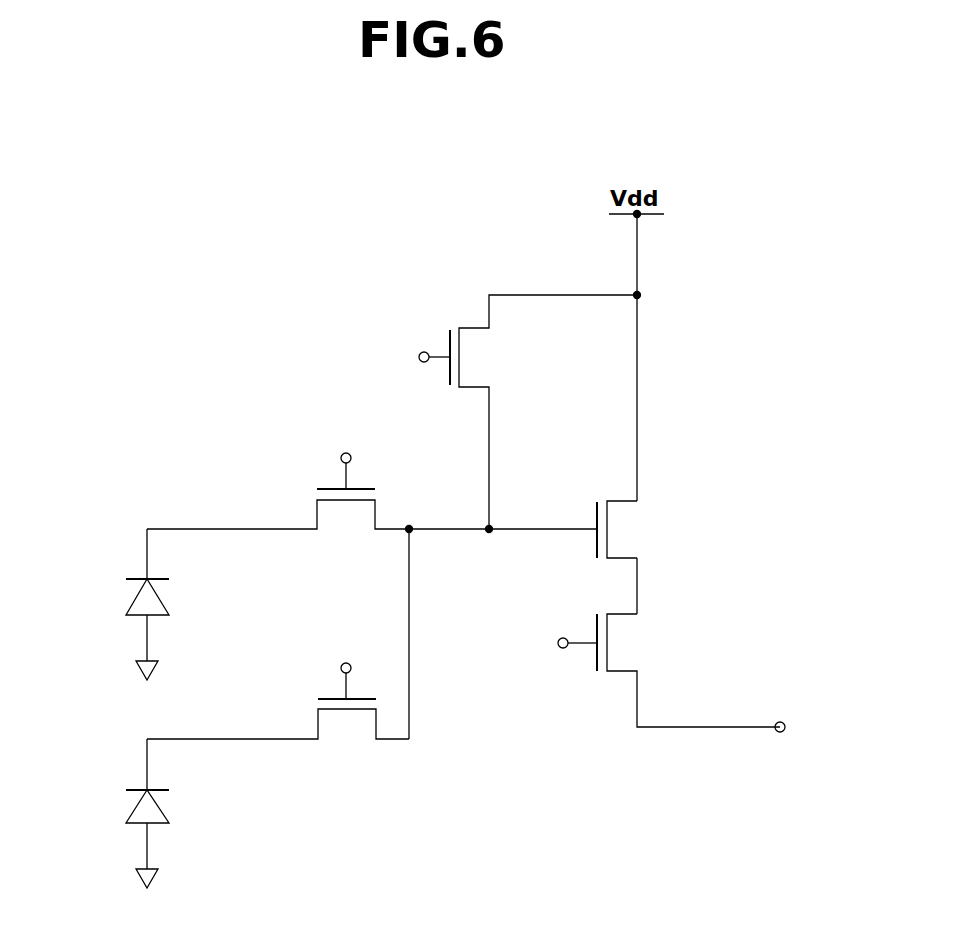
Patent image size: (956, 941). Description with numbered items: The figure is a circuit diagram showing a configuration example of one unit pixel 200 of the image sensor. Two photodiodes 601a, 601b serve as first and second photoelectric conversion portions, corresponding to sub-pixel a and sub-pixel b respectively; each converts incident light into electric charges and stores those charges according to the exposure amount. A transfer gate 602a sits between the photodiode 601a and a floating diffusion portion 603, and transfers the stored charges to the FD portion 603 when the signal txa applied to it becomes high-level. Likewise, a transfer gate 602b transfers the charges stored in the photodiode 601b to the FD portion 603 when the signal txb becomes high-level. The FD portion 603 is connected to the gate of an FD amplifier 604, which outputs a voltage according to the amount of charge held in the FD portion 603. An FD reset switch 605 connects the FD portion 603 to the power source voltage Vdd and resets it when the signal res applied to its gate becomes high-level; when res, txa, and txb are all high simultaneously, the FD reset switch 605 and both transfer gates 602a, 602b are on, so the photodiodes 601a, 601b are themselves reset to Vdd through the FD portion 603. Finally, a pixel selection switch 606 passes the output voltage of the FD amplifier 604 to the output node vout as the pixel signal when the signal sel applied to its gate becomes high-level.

The unit pixel 200 is at (199, 160).
The photodiode 601a is at (128, 597).
The photodiode 601b is at (128, 807).
The transfer gate 602a is at (317, 497).
The transfer gate 602b is at (318, 708).
The floating diffusion (FD) portion 603 is at (489, 533).
The FD amplifier 604 is at (635, 530).
The FD reset switch 605 is at (456, 326).
The pixel selection switch 606 is at (635, 643).